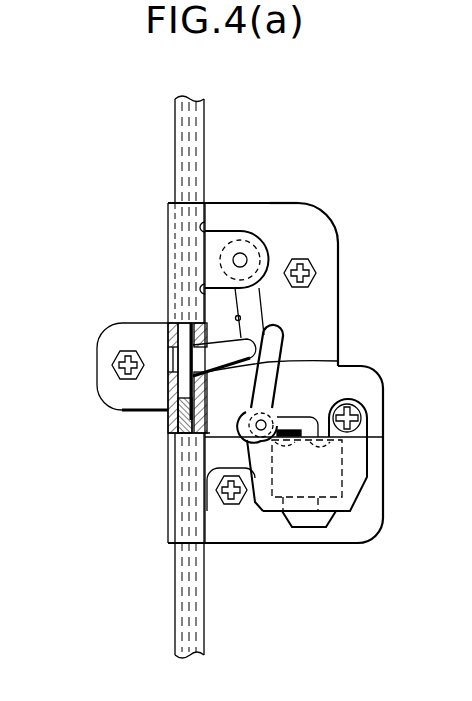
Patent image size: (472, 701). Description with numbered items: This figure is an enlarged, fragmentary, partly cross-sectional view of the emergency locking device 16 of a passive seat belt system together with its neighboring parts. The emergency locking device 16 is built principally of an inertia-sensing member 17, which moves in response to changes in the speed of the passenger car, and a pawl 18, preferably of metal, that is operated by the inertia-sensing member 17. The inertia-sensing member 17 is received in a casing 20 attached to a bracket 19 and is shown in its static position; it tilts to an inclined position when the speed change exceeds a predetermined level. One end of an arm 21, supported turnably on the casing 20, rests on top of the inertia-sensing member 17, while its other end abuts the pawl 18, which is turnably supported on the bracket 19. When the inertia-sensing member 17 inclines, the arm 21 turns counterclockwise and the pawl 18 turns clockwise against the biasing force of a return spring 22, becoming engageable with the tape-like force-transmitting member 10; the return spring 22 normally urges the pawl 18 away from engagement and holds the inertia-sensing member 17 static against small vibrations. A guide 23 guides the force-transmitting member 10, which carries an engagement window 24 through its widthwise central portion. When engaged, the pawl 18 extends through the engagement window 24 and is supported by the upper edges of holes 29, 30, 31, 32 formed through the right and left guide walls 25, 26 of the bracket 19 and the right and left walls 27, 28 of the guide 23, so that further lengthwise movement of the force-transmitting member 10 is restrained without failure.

The force-transmitting member 10 is at (168, 412).
The emergency locking device 16 is at (318, 197).
The inertia-sensing member 17 is at (336, 455).
The pawl 18 is at (238, 290).
The bracket 19 is at (282, 203).
The casing 20 is at (358, 450).
The arm 21 is at (340, 362).
The return spring 22 is at (225, 225).
The guide 23 is at (175, 620).
The engagement window 24 is at (97, 386).
The right guide wall 25 is at (205, 433).
The left guide wall 26 is at (170, 328).
The right wall 27 is at (180, 437).
The left wall 28 is at (168, 318).
The hole 29 is at (272, 340).
The hole 30 is at (167, 355).
The hole 31 is at (243, 305).
The hole 32 is at (168, 345).